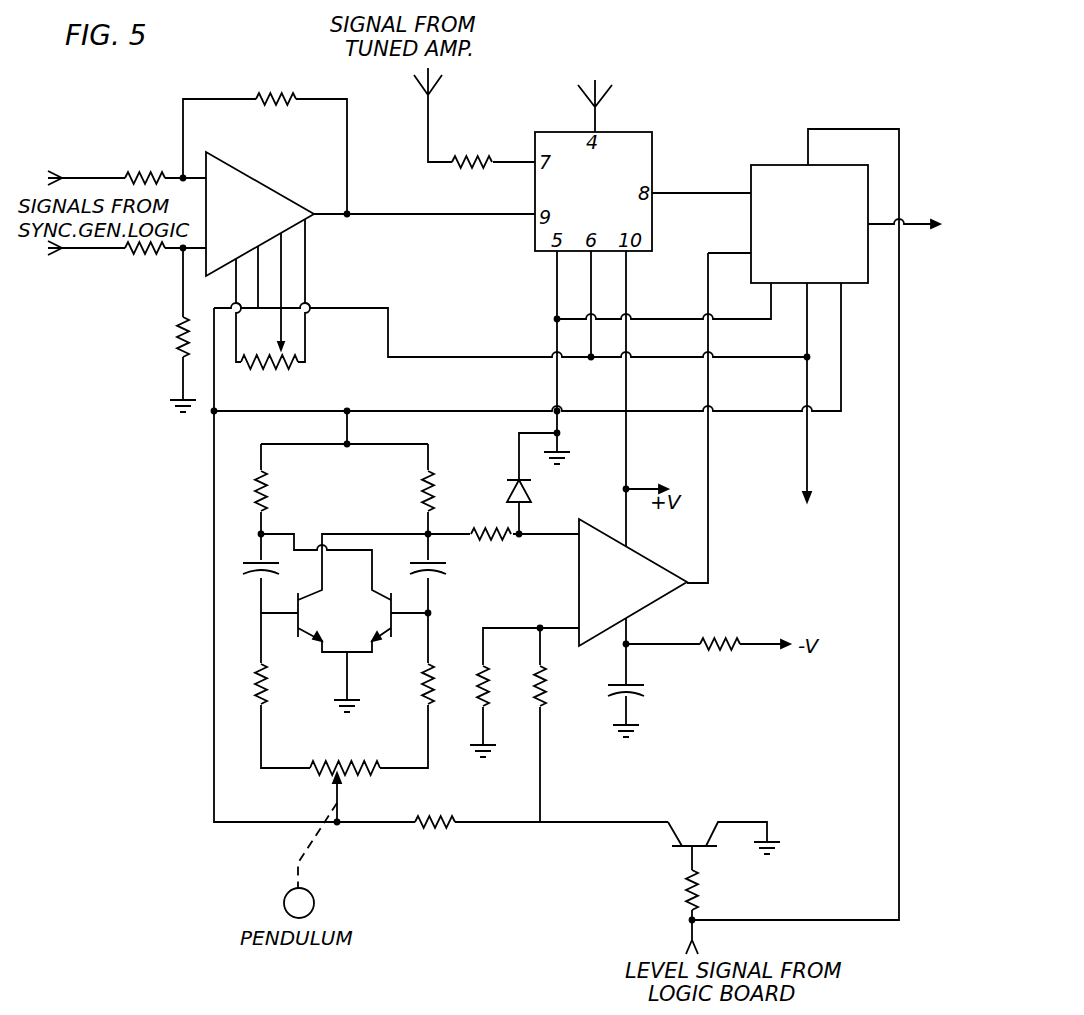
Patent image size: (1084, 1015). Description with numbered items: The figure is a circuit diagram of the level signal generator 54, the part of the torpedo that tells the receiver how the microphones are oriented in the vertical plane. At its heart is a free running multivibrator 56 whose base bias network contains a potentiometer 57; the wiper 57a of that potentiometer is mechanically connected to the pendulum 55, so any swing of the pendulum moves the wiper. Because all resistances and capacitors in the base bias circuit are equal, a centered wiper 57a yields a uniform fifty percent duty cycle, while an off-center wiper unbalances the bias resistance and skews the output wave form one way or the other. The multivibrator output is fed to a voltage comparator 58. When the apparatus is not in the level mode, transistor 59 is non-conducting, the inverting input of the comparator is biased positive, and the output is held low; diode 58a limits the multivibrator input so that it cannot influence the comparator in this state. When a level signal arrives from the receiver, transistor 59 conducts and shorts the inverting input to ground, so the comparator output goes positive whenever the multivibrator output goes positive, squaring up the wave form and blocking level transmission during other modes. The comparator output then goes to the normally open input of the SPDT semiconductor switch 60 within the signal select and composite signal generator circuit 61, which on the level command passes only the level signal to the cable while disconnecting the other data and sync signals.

The level signal generator 54 is at (165, 633).
The pendulum 55 is at (316, 901).
The free running multivibrator 56 is at (252, 708).
The potentiometer 57 is at (316, 790).
The wiper 57a is at (339, 811).
The voltage comparator 58 is at (671, 600).
The diode 58a is at (530, 492).
The transistor 59 is at (700, 824).
The SPDT semiconductor switch 60 is at (777, 163).
The signal select and composite signal generator circuit 61 is at (374, 267).